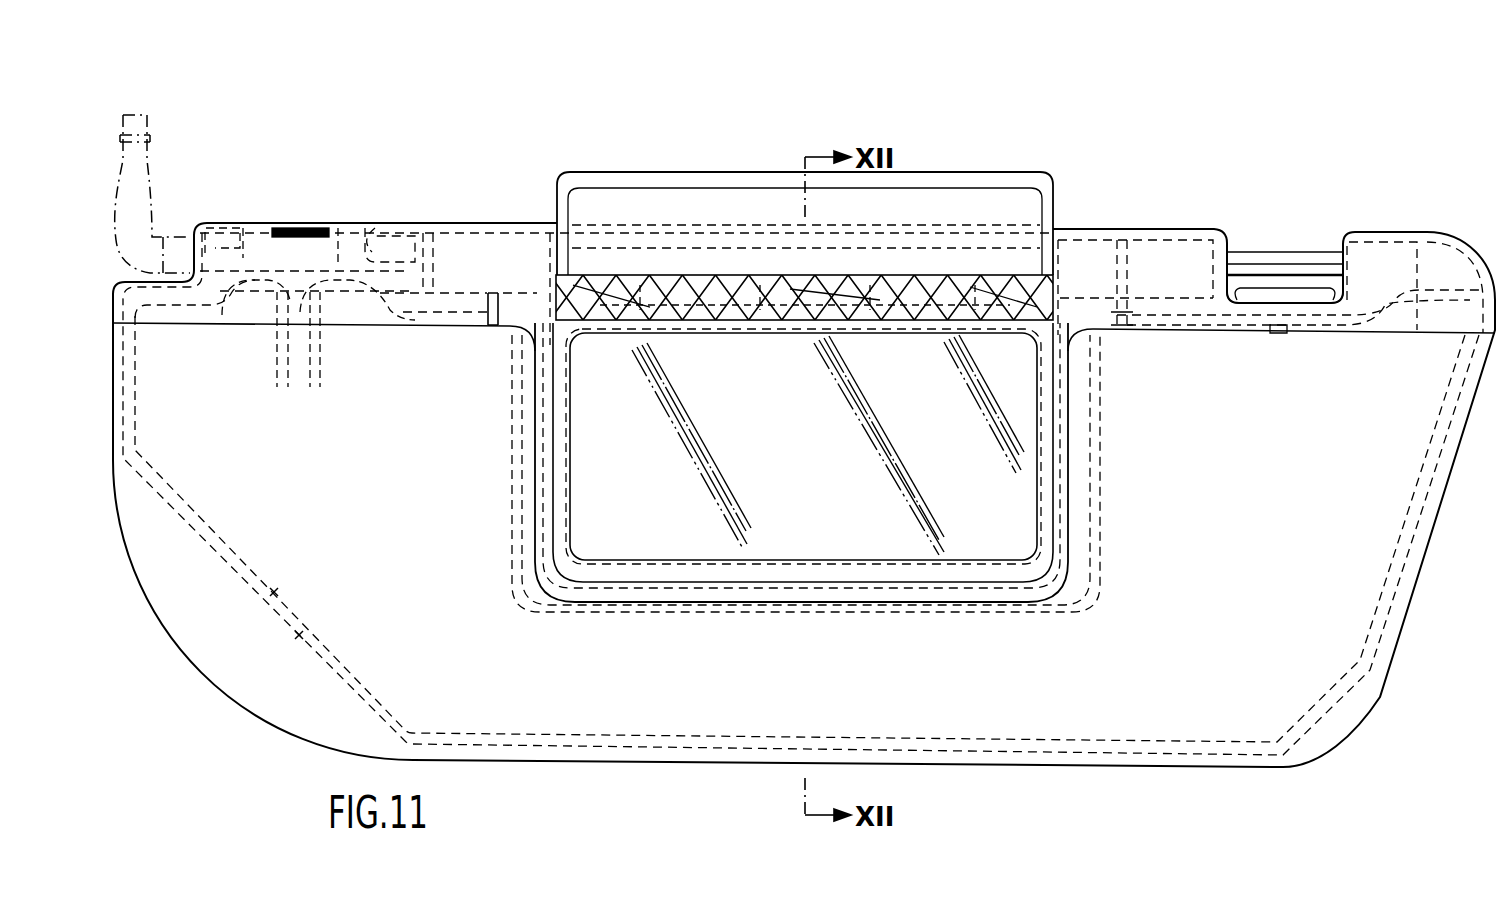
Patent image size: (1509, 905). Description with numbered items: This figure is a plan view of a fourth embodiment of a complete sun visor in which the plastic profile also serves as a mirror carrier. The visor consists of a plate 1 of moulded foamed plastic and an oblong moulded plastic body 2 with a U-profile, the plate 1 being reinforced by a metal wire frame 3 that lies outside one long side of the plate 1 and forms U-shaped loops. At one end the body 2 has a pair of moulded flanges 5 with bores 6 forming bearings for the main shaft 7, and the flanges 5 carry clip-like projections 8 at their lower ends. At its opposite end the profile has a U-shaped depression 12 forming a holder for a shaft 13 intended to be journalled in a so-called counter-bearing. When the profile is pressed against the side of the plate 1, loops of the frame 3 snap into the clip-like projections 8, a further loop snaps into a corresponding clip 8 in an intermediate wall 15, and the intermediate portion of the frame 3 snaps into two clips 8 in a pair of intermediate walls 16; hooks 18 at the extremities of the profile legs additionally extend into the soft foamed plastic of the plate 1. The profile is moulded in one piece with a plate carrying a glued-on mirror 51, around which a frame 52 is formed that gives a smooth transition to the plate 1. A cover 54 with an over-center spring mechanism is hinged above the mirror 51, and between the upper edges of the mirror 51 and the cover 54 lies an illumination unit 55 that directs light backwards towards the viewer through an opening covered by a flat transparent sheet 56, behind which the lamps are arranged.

The plate 1 is at (200, 660).
The plastic body 2 is at (422, 223).
The metal wire frame 3 is at (283, 565).
The moulded flanges 5 is at (244, 228).
The bores 6 is at (208, 228).
The main shaft 7 is at (157, 184).
The clip-like projections 8 is at (237, 292).
The U-shaped depression 12 is at (1233, 222).
The shaft 13 is at (1290, 252).
The intermediate wall 15 is at (1413, 241).
The intermediate walls 16 is at (1125, 288).
The hooks 18 is at (1276, 338).
The mirror 51 is at (805, 441).
The frame 52 is at (1068, 432).
The cover 54 is at (985, 176).
The illumination unit 55 is at (787, 328).
The flat transparent sheet 56 is at (833, 304).